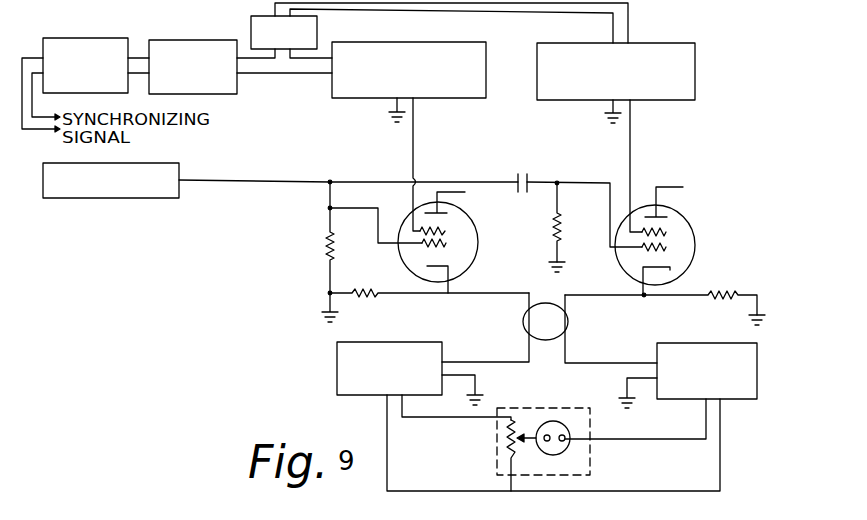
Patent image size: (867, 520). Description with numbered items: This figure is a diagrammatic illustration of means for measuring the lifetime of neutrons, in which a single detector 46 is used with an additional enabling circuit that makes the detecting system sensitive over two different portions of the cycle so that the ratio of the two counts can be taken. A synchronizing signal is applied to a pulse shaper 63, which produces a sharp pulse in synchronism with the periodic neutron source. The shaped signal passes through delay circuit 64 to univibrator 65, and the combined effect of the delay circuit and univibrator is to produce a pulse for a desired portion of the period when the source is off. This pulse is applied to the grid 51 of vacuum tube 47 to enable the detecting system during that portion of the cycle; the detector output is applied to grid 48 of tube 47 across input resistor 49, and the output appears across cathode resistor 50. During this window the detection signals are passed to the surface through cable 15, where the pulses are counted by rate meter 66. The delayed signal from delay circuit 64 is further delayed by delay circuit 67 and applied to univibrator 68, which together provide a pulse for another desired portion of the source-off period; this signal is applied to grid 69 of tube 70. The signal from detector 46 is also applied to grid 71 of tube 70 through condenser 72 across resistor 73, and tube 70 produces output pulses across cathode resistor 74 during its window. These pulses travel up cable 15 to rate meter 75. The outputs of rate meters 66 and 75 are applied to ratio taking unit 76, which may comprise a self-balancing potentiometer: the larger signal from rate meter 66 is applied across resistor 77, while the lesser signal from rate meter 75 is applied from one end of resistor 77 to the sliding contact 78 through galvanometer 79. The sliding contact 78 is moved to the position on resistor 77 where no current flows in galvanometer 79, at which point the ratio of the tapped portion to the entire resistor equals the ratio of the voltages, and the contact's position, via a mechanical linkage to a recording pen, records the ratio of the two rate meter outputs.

The pulse shaper 63 is at (100, 38).
The delay circuit 64 is at (181, 40).
The delay circuit 67 is at (317, 28).
The univibrator 65 is at (413, 42).
The univibrator 68 is at (642, 43).
The detector 46 is at (177, 163).
The condenser 72 is at (525, 173).
The input resistor 49 is at (330, 233).
The grid 51 is at (445, 231).
The grid 48 is at (446, 243).
The vacuum tube 47 is at (475, 262).
The cathode resistor 50 is at (360, 297).
The cable 15 is at (524, 316).
The resistor 73 is at (560, 228).
The grid 69 is at (666, 232).
The grid 71 is at (666, 246).
The tube 70 is at (694, 261).
The cathode resistor 74 is at (732, 300).
The rate meter 66 is at (337, 353).
The rate meter 75 is at (758, 350).
The sliding contact 78 is at (520, 436).
The galvanometer 79 is at (560, 421).
The resistor 77 is at (503, 433).
The ratio taking unit 76 is at (593, 465).